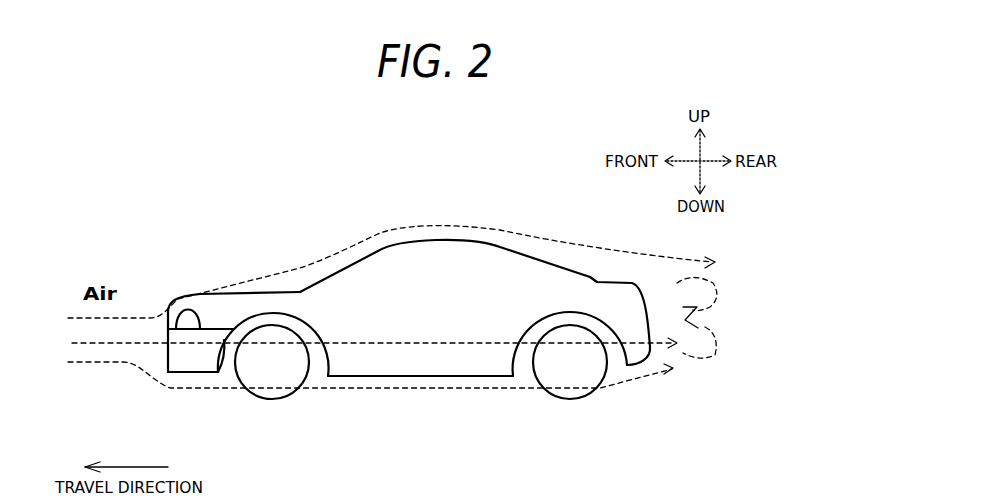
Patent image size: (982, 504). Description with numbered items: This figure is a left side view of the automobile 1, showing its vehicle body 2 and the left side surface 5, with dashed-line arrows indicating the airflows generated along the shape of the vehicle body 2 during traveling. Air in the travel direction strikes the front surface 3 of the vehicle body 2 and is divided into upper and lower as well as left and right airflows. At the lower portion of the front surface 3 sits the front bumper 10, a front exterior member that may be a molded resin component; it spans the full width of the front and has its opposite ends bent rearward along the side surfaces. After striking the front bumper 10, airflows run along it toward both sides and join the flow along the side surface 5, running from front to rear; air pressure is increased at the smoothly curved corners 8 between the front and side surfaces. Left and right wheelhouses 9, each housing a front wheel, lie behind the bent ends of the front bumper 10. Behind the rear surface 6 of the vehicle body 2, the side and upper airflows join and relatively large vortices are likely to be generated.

The automobile 1 is at (526, 211).
The vehicle body 2 is at (437, 235).
The front surface 3 is at (167, 326).
The left side surface 5 is at (468, 356).
The rear surface 6 is at (643, 300).
The corner 8 is at (173, 352).
The wheelhouse 9 is at (230, 352).
The front bumper 10 is at (200, 352).